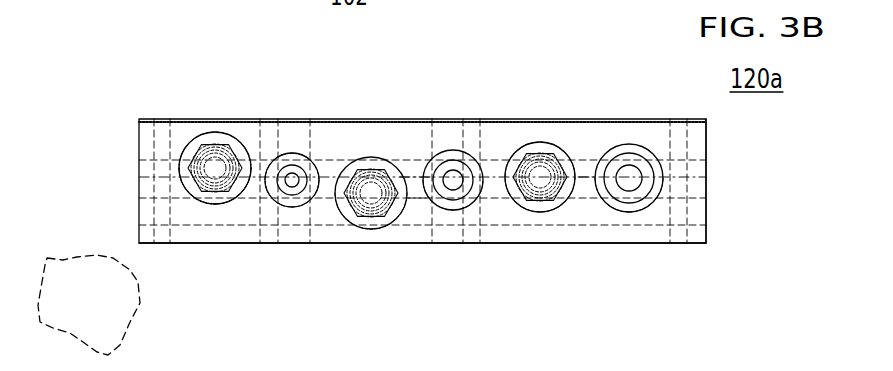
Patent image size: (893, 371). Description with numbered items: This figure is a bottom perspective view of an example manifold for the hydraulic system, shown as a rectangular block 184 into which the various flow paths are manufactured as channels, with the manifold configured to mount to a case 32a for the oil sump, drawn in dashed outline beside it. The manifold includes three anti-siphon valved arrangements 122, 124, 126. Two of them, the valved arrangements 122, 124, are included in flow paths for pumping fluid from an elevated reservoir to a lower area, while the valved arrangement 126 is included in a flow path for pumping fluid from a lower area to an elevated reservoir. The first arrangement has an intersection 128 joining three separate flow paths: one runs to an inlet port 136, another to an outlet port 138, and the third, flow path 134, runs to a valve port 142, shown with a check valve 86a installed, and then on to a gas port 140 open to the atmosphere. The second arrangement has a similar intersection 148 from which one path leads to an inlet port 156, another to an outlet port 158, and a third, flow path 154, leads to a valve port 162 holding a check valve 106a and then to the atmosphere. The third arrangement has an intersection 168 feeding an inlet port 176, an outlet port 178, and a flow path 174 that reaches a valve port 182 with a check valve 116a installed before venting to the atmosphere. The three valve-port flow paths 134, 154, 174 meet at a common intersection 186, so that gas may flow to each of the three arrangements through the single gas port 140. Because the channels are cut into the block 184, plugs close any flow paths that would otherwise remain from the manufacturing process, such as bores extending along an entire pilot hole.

The case 32a is at (108, 315).
The check valve 86a is at (537, 153).
The check valve 106a is at (370, 192).
The check valve 116a is at (195, 155).
The valved arrangement 122 is at (578, 147).
The valved arrangement 124 is at (408, 144).
The valved arrangement 126 is at (187, 127).
The intersection 128 is at (254, 195).
The flow path 134 is at (252, 172).
The inlet port 136 is at (661, 198).
The outlet port 138 is at (292, 122).
The gas port 140 is at (369, 248).
The valve port 142 is at (176, 179).
The intersection 148 is at (423, 199).
The flow path 154 is at (412, 187).
The inlet port 156 is at (473, 209).
The outlet port 158 is at (456, 128).
The valve port 162 is at (357, 160).
The intersection 168 is at (595, 202).
The flow path 174 is at (580, 170).
The inlet port 176 is at (309, 214).
The outlet port 178 is at (628, 227).
The valve port 182 is at (554, 141).
The block 184 is at (706, 150).
The intersection 186 is at (391, 232).